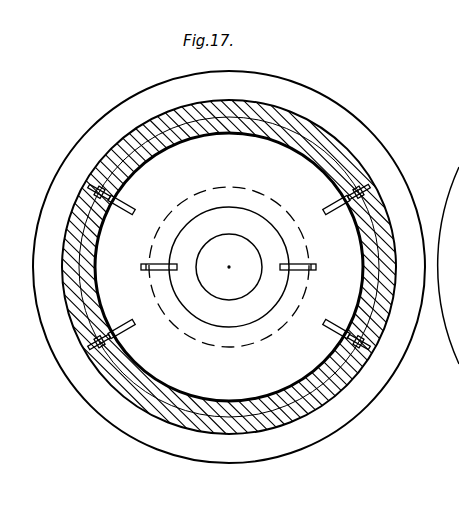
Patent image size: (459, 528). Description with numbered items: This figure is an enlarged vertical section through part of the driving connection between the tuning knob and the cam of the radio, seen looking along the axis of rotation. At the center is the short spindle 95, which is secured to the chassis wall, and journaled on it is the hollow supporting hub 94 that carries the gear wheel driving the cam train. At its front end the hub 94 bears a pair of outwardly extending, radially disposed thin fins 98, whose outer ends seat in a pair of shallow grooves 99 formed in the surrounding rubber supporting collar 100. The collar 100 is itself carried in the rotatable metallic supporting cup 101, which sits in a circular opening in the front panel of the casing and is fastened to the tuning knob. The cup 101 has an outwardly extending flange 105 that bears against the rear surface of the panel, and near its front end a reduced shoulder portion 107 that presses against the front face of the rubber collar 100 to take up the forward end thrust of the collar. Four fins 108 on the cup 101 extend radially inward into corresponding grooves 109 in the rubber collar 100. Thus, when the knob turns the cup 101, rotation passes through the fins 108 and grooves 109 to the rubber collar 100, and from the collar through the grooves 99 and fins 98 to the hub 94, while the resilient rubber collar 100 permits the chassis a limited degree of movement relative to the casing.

The hollow supporting hub 94 is at (213, 319).
The short spindle 95 is at (232, 292).
The thin fins 98 is at (157, 262).
The shallow grooves 99 is at (146, 270).
The rubber supporting collar 100 is at (160, 377).
The rotatable metallic supporting cup 101 is at (304, 105).
The flange 105 is at (63, 172).
The reduced shoulder portion 107 is at (178, 118).
The fins 108 is at (124, 203).
The grooves 109 is at (130, 204).